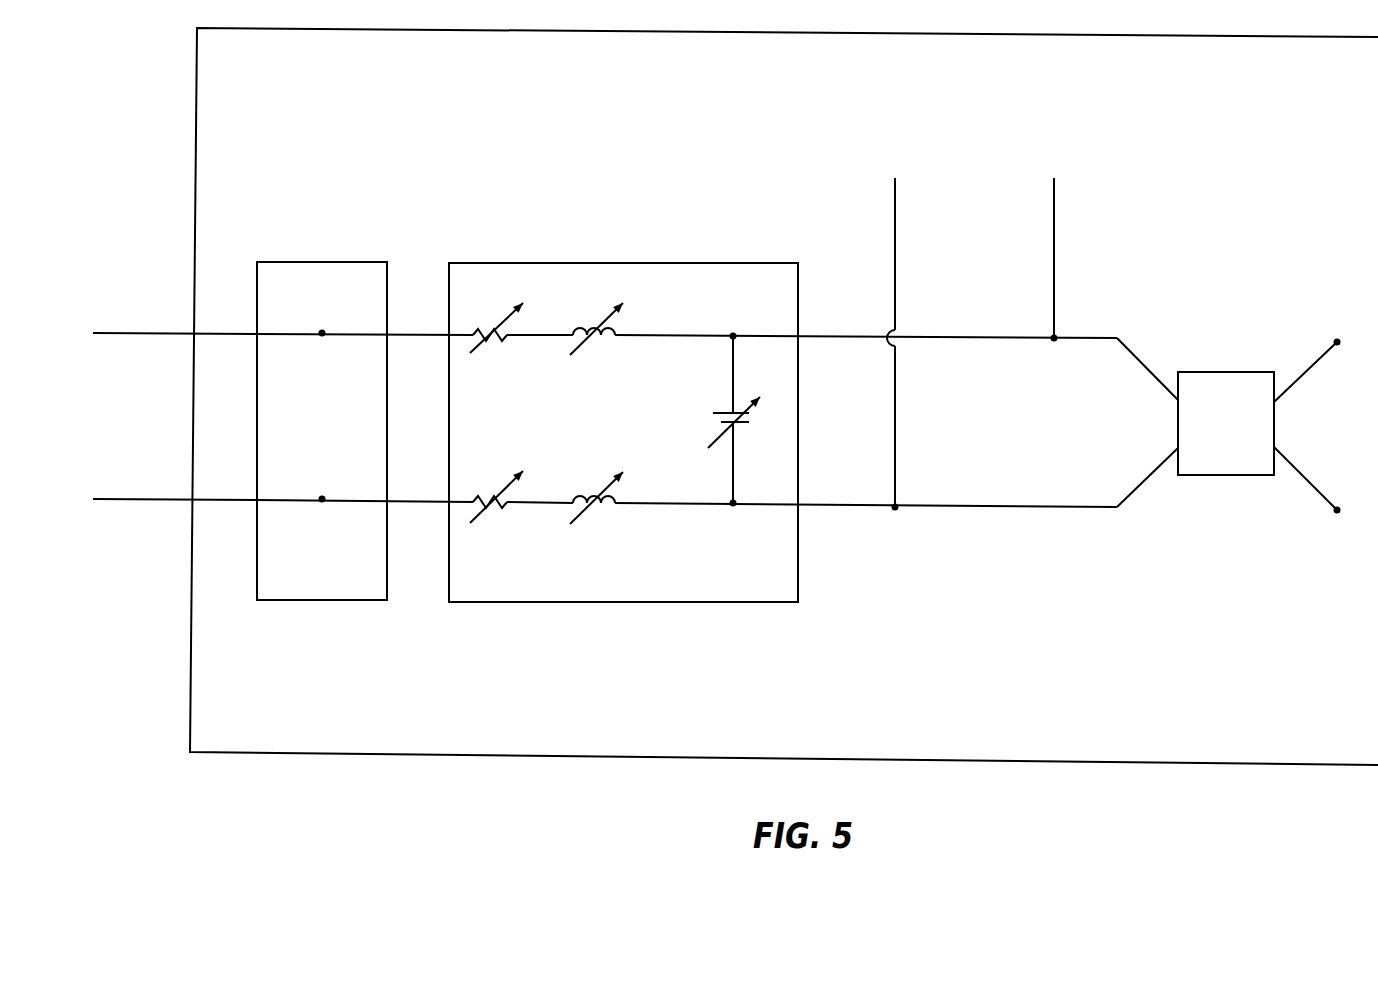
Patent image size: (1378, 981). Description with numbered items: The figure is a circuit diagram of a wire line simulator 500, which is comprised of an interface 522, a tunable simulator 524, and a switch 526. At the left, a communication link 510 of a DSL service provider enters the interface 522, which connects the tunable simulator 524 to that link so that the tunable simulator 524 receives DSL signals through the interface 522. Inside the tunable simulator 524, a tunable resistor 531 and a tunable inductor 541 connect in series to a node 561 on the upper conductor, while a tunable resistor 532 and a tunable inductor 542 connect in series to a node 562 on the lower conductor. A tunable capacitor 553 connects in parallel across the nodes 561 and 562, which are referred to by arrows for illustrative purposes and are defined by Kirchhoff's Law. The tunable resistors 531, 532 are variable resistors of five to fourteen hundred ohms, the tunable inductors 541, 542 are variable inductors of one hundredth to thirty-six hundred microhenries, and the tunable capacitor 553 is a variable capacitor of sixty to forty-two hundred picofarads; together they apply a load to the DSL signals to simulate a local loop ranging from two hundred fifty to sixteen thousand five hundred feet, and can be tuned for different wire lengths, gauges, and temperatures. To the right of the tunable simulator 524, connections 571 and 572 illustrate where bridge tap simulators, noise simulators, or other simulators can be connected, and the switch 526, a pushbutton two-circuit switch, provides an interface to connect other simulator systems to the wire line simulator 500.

The wire line simulator 500 is at (460, 744).
The communication link 510 is at (144, 499).
The interface 522 is at (300, 581).
The tunable simulator 524 is at (697, 584).
The switch 526 is at (1207, 451).
The tunable resistor 531 is at (502, 338).
The tunable resistor 532 is at (493, 494).
The tunable inductor 541 is at (612, 338).
The tunable inductor 542 is at (596, 494).
The tunable capacitor 553 is at (742, 426).
The node 561 is at (737, 323).
The node 562 is at (742, 516).
The connection 571 is at (895, 233).
The connection 572 is at (1054, 220).